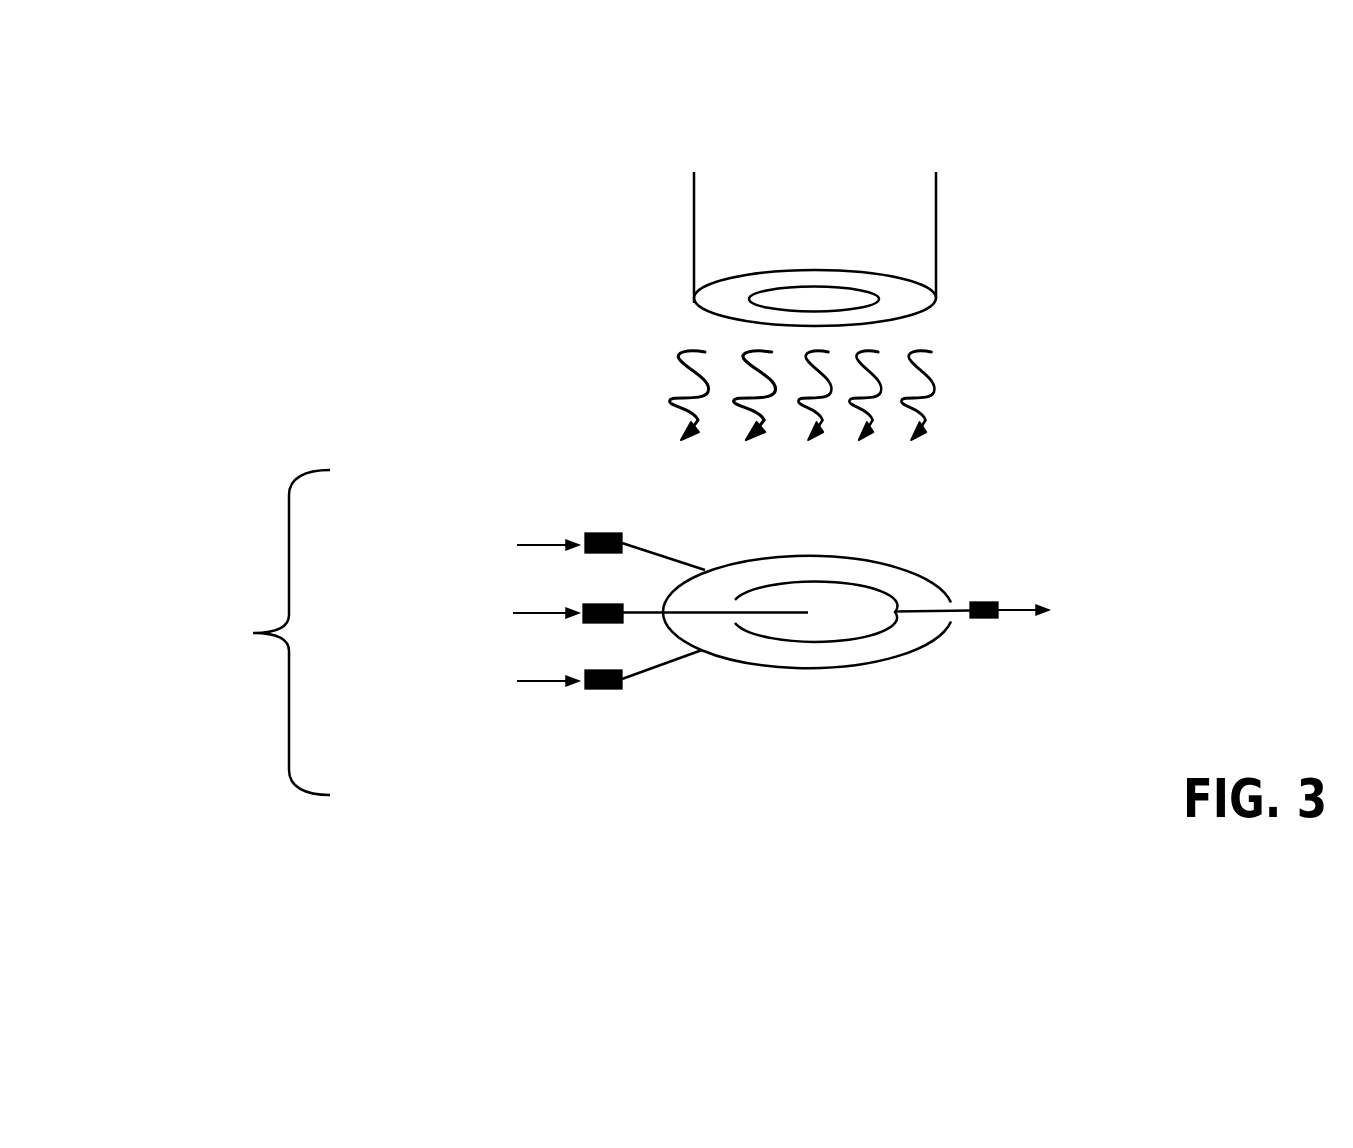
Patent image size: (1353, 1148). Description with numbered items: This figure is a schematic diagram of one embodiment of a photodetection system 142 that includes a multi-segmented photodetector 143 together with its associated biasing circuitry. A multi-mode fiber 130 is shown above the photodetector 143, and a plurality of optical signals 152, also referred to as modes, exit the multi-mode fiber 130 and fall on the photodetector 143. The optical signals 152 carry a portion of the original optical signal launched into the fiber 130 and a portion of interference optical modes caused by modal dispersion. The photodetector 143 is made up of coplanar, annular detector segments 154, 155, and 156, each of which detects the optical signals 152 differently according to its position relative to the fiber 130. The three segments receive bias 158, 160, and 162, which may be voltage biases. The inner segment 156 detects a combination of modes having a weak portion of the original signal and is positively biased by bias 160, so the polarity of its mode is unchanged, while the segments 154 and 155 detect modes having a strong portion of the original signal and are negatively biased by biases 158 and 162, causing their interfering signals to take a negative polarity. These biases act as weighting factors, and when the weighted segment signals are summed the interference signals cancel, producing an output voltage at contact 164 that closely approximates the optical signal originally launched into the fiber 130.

The multi-mode fiber 130 is at (694, 239).
The optical signals 152 is at (646, 386).
The photodetection system 142 is at (253, 633).
The photodetector 143 is at (815, 644).
The detector segment 154 is at (762, 555).
The detector segment 155 is at (905, 655).
The detector segment 156 is at (783, 627).
The bias 158 is at (437, 545).
The bias 160 is at (437, 615).
The bias 162 is at (437, 682).
The contact 164 is at (998, 612).